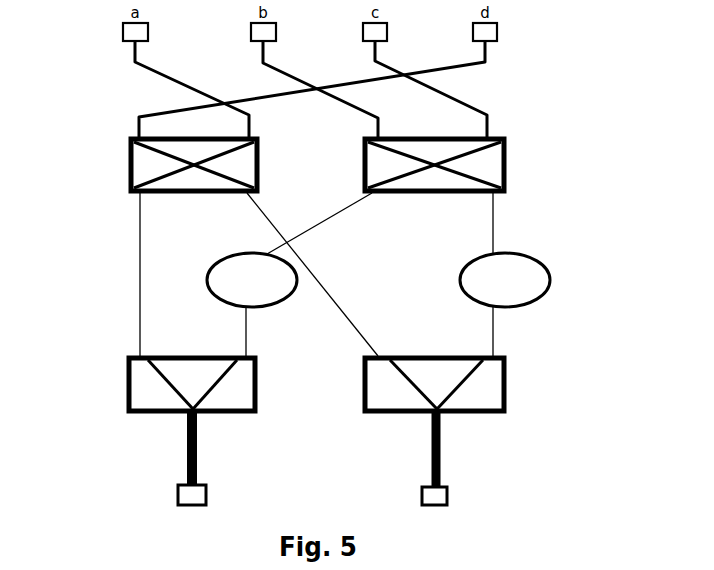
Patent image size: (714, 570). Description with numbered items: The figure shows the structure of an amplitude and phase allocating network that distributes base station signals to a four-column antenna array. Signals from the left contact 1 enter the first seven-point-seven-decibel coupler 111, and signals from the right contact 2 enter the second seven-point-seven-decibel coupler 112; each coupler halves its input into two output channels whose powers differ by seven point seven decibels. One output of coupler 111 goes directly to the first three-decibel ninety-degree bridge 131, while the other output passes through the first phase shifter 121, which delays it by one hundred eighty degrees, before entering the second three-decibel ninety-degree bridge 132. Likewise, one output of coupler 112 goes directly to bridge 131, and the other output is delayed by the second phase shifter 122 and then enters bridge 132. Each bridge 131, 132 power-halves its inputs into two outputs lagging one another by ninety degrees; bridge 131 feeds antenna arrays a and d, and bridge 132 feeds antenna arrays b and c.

The left contact 1 is at (178, 490).
The right contact 2 is at (448, 497).
The 7.7-decibel coupler 111 is at (127, 385).
The 7.7-decibel coupler 112 is at (506, 395).
The 180-degree phase shifter 121 is at (262, 306).
The 180-degree phase shifter 122 is at (461, 272).
The 3-decibel 90-degree bridge 131 is at (129, 165).
The 3-decibel 90-degree bridge 132 is at (506, 171).